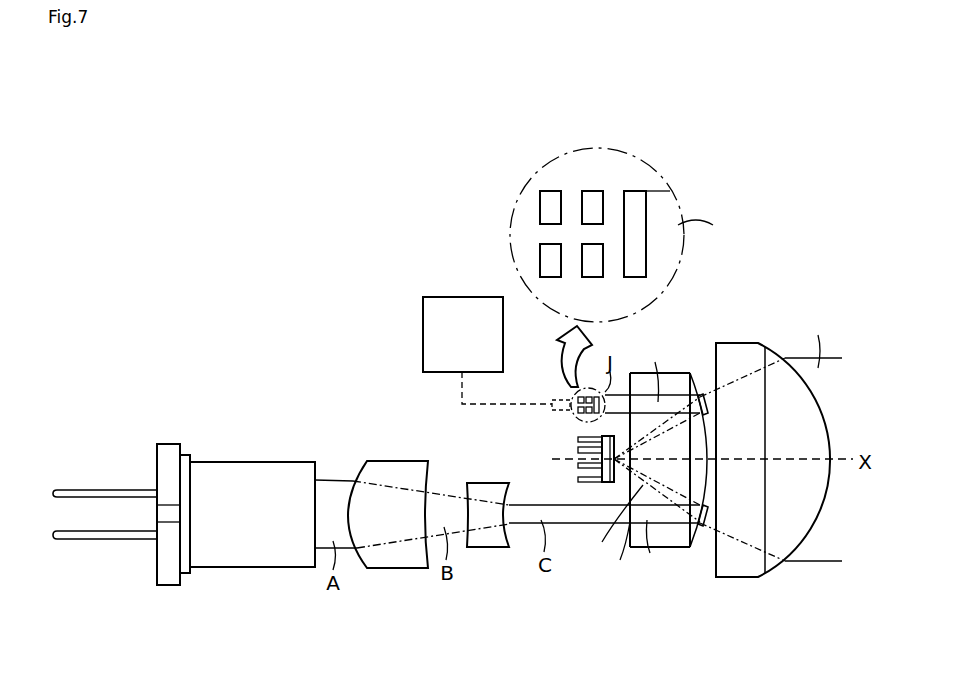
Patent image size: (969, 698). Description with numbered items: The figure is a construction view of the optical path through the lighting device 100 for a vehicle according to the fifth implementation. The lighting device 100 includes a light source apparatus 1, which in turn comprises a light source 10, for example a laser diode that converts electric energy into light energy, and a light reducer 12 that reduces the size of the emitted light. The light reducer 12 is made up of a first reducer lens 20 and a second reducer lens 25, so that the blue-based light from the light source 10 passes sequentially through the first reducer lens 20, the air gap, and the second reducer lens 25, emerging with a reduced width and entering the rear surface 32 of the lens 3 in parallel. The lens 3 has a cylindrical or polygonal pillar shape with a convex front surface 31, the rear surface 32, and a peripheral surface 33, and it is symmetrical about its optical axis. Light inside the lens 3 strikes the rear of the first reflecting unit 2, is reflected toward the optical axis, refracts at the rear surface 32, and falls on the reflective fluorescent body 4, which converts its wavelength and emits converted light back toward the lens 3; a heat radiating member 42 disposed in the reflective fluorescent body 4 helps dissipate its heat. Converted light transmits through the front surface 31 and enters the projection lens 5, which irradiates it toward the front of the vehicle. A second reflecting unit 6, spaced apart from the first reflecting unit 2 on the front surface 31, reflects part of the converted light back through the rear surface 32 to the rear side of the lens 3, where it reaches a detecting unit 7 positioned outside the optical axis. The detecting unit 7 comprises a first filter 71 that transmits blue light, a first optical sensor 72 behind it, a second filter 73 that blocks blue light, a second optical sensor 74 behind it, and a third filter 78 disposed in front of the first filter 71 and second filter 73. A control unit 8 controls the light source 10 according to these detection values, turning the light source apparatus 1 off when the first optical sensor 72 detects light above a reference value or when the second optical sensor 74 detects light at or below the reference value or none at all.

The lighting device for a vehicle 100 is at (147, 169).
The light source apparatus 1 is at (302, 360).
The light source 10 is at (300, 440).
The light reducer 12 is at (373, 440).
The first reducer lens 20 is at (391, 568).
The second reducer lens 25 is at (490, 547).
The control unit 8 is at (437, 303).
The detecting unit 7 is at (562, 381).
The first filter 71 is at (592, 192).
The first optical sensor 72 is at (547, 202).
The second filter 73 is at (593, 273).
The second optical sensor 74 is at (547, 258).
The third filter 78 is at (633, 193).
The reflective fluorescent body 4 is at (610, 482).
The heat radiating member 42 is at (578, 450).
The lens 3 is at (663, 547).
The front surface 31 is at (690, 547).
The rear surface 32 is at (630, 547).
The peripheral surface 33 is at (677, 548).
The second reflecting unit 6 is at (702, 392).
The first reflecting unit 2 is at (697, 526).
The projection lens 5 is at (753, 490).